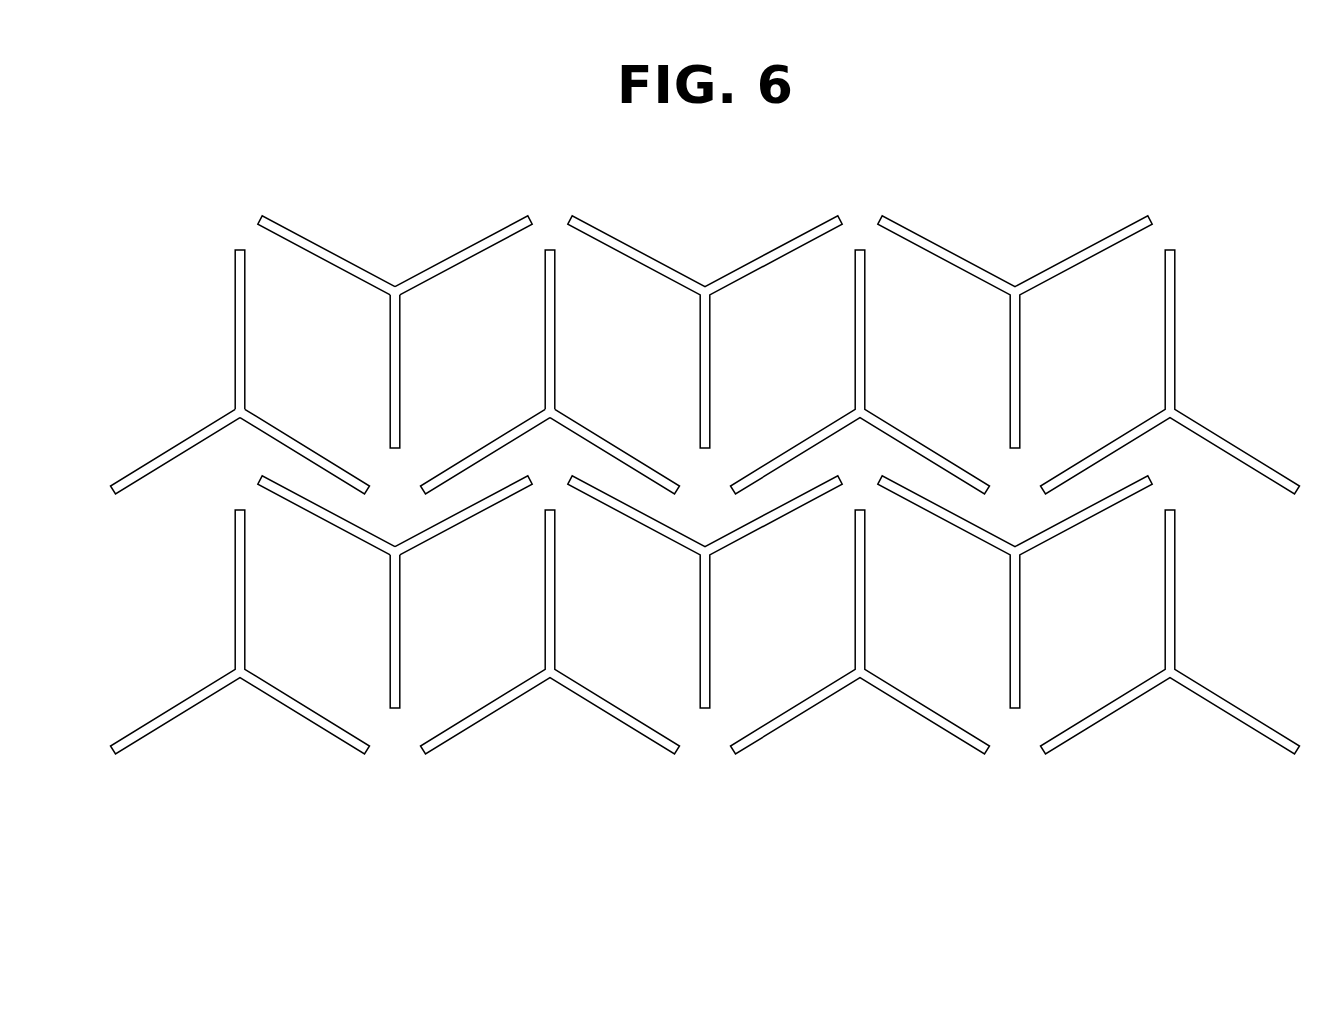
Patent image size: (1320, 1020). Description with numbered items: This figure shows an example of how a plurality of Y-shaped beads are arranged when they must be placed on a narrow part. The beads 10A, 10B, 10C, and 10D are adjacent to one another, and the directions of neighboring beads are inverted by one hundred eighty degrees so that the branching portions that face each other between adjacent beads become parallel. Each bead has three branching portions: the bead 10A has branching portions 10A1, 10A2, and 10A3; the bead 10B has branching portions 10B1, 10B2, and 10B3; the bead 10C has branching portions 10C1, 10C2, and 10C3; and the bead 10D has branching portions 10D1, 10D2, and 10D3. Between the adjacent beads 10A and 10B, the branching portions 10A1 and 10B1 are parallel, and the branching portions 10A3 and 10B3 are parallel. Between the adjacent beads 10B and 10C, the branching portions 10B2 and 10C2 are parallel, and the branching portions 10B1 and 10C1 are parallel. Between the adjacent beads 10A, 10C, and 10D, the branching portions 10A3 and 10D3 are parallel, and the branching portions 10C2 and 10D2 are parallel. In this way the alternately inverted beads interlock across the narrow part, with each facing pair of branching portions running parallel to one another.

The bead 10A is at (237, 372).
The branching portion 10A1 is at (247, 337).
The branching portion 10A2 is at (145, 467).
The branching portion 10A3 is at (308, 448).
The bead 10B is at (395, 302).
The branching portion 10B1 is at (402, 365).
The branching portion 10B2 is at (455, 268).
The branching portion 10B3 is at (328, 247).
The bead 10C is at (550, 372).
The branching portion 10C1 is at (557, 312).
The branching portion 10C2 is at (477, 452).
The branching portion 10C3 is at (618, 450).
The bead 10D is at (395, 592).
The branching portion 10D1 is at (402, 655).
The branching portion 10D2 is at (468, 519).
The branching portion 10D3 is at (305, 512).